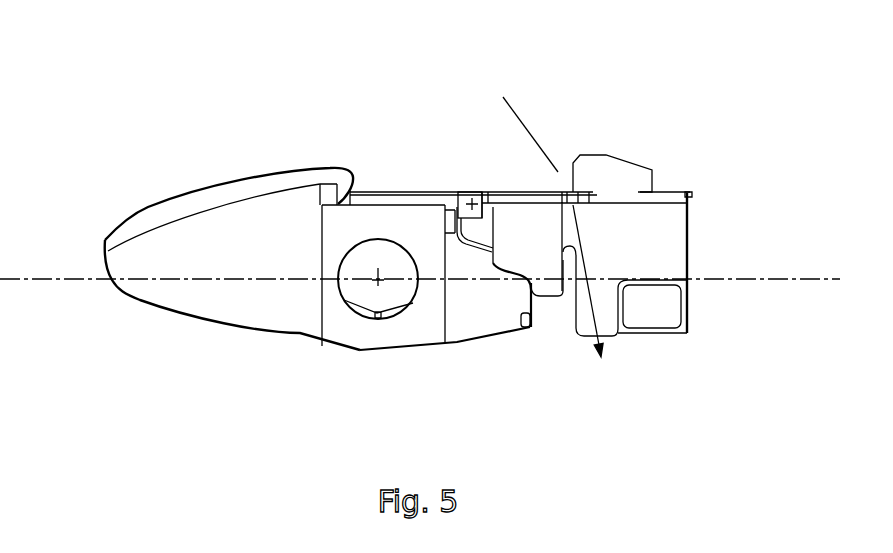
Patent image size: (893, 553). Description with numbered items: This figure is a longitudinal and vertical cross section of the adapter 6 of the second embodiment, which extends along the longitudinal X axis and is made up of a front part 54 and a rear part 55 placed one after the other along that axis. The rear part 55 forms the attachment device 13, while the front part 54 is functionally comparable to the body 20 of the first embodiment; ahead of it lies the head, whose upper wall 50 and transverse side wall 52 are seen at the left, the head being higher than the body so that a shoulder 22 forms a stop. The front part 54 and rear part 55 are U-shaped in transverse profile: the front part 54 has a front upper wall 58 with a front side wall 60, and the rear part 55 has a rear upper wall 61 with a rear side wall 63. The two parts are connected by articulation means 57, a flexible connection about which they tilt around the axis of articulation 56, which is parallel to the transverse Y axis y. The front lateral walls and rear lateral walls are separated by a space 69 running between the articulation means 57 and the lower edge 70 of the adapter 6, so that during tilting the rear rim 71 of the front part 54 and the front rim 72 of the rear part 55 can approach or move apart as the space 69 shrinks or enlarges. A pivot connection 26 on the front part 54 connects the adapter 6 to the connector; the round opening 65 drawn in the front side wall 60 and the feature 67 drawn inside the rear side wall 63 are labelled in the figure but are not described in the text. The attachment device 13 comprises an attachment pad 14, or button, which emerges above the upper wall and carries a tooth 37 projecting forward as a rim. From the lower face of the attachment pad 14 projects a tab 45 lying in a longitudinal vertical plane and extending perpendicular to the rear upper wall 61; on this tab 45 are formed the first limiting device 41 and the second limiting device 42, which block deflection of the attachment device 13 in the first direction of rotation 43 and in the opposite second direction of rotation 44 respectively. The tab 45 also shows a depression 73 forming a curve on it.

The adapter 6 is at (717, 153).
The attachment device 13 is at (557, 194).
The attachment pad 14 is at (620, 103).
The body 20 is at (449, 241).
The shoulder 22 is at (222, 182).
The pivot connection 26 is at (330, 310).
The tooth 37 is at (572, 153).
The first limiting device 41 is at (472, 198).
The second limiting device 42 is at (550, 294).
The first direction of rotation 43 is at (504, 95).
The second direction of rotation 44 is at (603, 321).
The tab 45 is at (559, 331).
The upper wall 50 is at (222, 182).
The side wall 52 is at (222, 182).
The front part 54 is at (449, 241).
The rear part 55 is at (562, 170).
The axis of articulation 56 is at (454, 124).
The articulation means 57 is at (450, 193).
The front upper wall 58 is at (345, 184).
The front side wall 60 is at (449, 241).
The rear upper wall 61 is at (504, 225).
The rear side wall 63 is at (627, 262).
The bore 65 is at (378, 279).
The inner box 67 is at (652, 306).
The space 69 is at (467, 222).
The lower edge 70 is at (453, 335).
The rear rim 71 is at (527, 327).
The front rim 72 is at (660, 332).
The depression 73 is at (500, 225).
The longitudinal X axis X is at (58, 282).
The transverse Y axis y is at (378, 283).